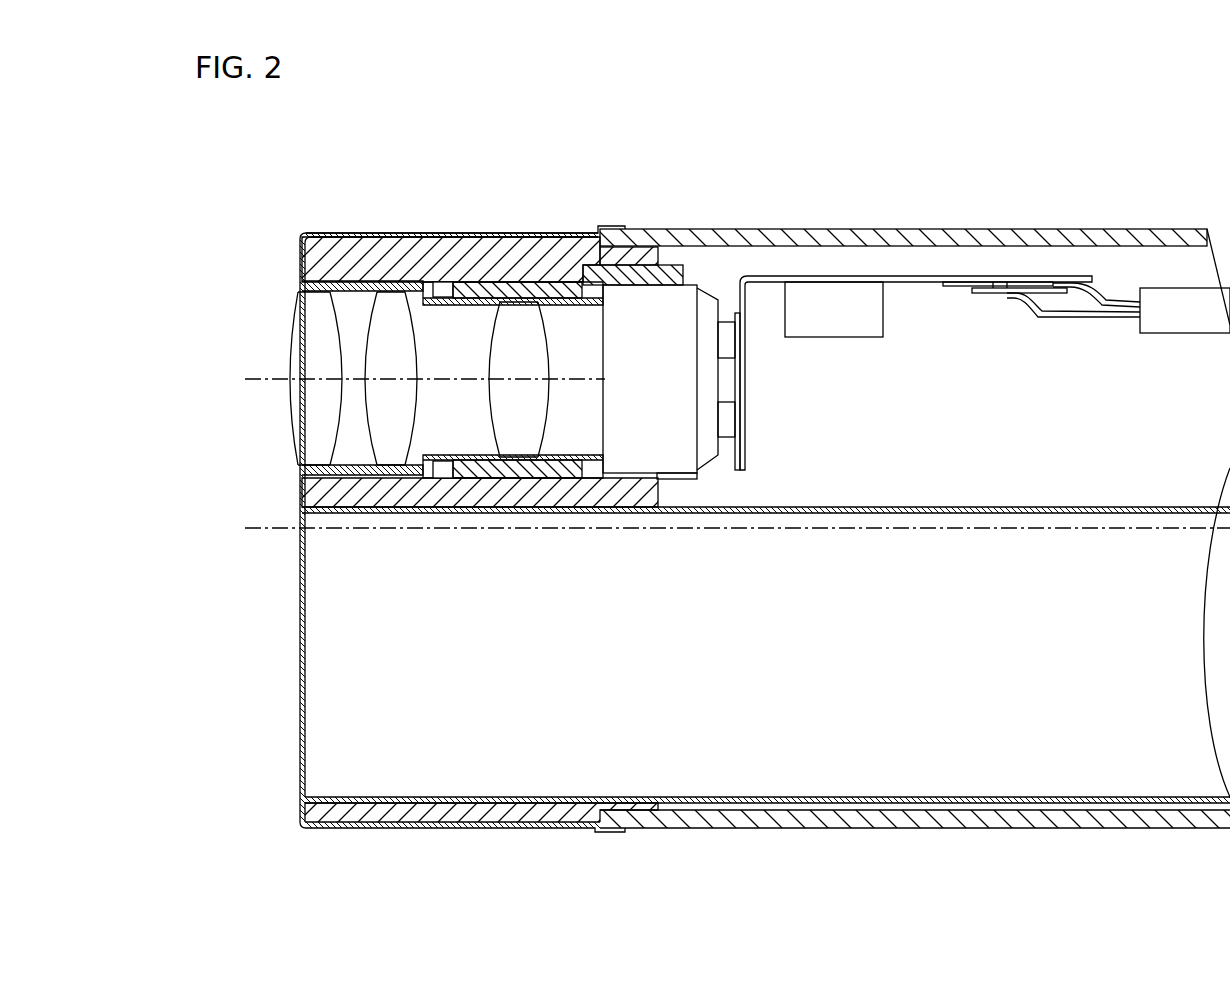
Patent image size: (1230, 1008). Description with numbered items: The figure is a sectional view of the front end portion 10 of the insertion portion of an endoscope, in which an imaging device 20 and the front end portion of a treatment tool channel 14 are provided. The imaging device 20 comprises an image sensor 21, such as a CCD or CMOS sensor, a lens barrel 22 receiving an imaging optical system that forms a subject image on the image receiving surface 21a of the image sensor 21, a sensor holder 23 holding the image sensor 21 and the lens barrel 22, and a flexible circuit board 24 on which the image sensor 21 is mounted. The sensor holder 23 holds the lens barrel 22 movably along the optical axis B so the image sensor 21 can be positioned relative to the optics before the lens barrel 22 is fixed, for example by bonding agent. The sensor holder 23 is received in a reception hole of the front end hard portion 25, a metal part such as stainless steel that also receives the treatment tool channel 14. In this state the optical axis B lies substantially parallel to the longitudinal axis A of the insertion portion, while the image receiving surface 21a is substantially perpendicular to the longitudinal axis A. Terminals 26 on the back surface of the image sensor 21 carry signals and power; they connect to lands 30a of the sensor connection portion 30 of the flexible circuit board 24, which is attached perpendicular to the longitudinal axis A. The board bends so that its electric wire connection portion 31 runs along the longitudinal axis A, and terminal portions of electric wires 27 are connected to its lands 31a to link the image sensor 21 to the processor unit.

The front end portion 10 is at (298, 246).
The treatment tool channel 14 is at (803, 800).
The imaging device 20 is at (750, 152).
The image sensor 21 is at (643, 305).
The image receiving surface 21a is at (600, 318).
The lens barrel 22 is at (428, 243).
The sensor holder 23 is at (494, 282).
The flexible circuit board 24 is at (779, 198).
The front end hard portion 25 is at (357, 235).
The terminals 26 is at (727, 318).
The electric wires 27 is at (1175, 288).
The sensor connection portion 30 is at (743, 330).
The lands 30a is at (745, 374).
The electric wire connection portion 31 is at (777, 275).
The lands 31a is at (955, 288).
The longitudinal axis A is at (726, 530).
The optical axis B is at (413, 381).